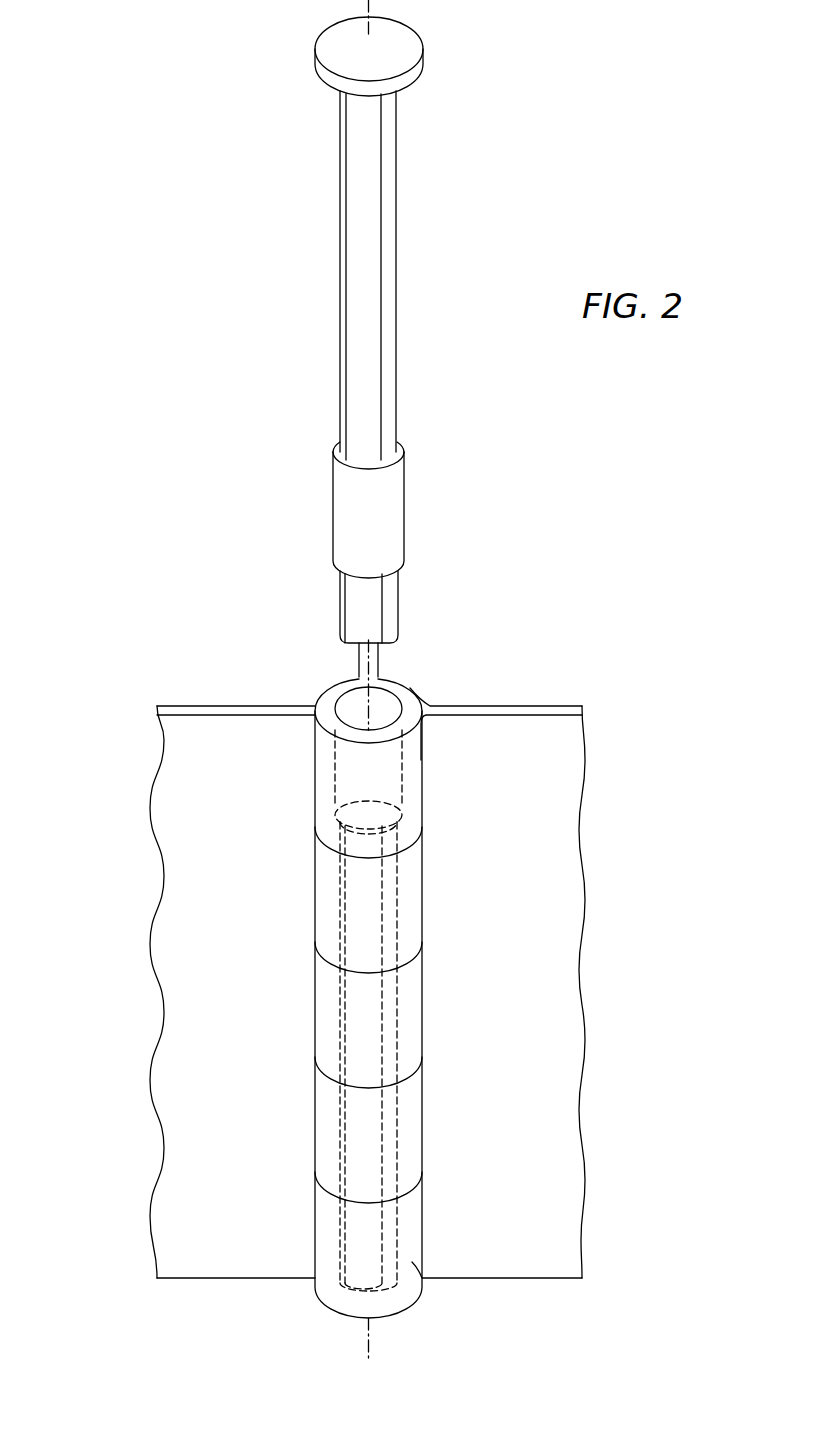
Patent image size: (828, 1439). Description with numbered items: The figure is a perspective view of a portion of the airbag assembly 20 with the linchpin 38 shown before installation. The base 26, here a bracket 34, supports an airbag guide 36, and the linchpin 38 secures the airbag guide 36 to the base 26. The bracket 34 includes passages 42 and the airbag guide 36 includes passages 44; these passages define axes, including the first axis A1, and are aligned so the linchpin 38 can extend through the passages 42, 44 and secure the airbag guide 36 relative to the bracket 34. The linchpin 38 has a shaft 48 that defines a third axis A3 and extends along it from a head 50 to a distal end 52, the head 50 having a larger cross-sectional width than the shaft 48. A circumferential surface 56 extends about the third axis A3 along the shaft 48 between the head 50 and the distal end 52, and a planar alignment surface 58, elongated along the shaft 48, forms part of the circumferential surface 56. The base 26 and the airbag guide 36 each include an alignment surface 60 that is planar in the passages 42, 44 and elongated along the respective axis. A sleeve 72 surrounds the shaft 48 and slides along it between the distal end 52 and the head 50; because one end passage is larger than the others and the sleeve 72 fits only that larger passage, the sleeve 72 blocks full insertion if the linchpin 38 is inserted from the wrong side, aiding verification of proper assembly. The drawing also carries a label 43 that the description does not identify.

The airbag assembly 20 is at (116, 304).
The base 26 is at (533, 663).
The bracket 34 is at (542, 747).
The airbag guide 36 is at (195, 747).
The linchpin 38 is at (455, 233).
The passages 42 is at (392, 708).
The bottom knuckle end 43 is at (395, 1312).
The passages 44 is at (363, 918).
The shaft 48 is at (398, 171).
The head 50 is at (345, 42).
The distal end 52 is at (405, 643).
The circumferential surface 56 is at (395, 361).
The alignment surface 58 is at (360, 226).
The alignment surface 60 is at (380, 931).
The sleeve 72 is at (393, 503).
The first axis A1 is at (279, 984).
The third axis A3 is at (398, 0).